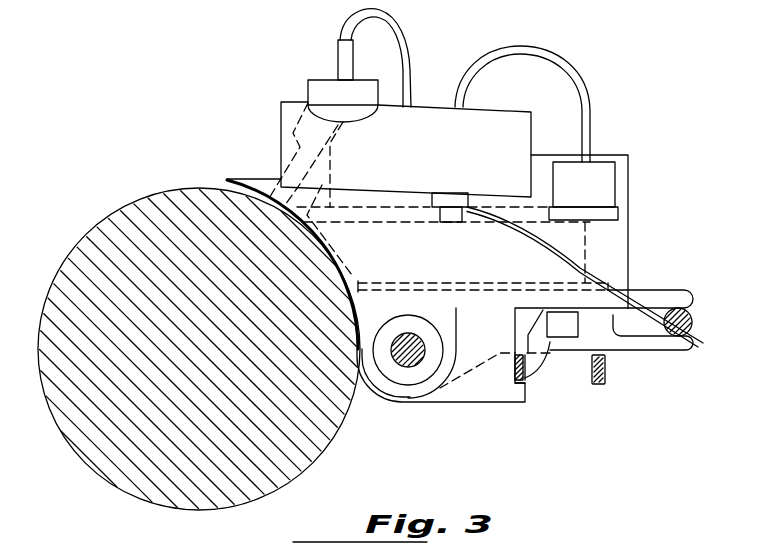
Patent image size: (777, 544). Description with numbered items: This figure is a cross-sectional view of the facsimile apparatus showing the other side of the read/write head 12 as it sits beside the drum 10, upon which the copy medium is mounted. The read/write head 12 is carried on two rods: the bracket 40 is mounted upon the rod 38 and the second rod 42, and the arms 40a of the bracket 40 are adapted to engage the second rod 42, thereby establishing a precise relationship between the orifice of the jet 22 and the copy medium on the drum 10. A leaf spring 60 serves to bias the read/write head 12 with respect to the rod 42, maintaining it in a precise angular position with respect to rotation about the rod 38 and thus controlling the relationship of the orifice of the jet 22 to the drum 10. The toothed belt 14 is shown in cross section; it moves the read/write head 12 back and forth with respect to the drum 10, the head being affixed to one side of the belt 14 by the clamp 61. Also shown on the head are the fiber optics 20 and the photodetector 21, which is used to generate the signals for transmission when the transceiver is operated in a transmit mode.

The drum 10 is at (137, 421).
The read/write head 12 is at (665, 196).
The toothed belt 14 is at (525, 385).
The fiber optics 20 is at (470, 73).
The photodetector 21 is at (595, 177).
The jet 22 is at (290, 158).
The rod 38 is at (419, 357).
The bracket 40 is at (607, 338).
The arms 40a is at (675, 297).
The second rod 42 is at (697, 322).
The leaf spring 60 is at (618, 293).
The clamp 61 is at (533, 363).